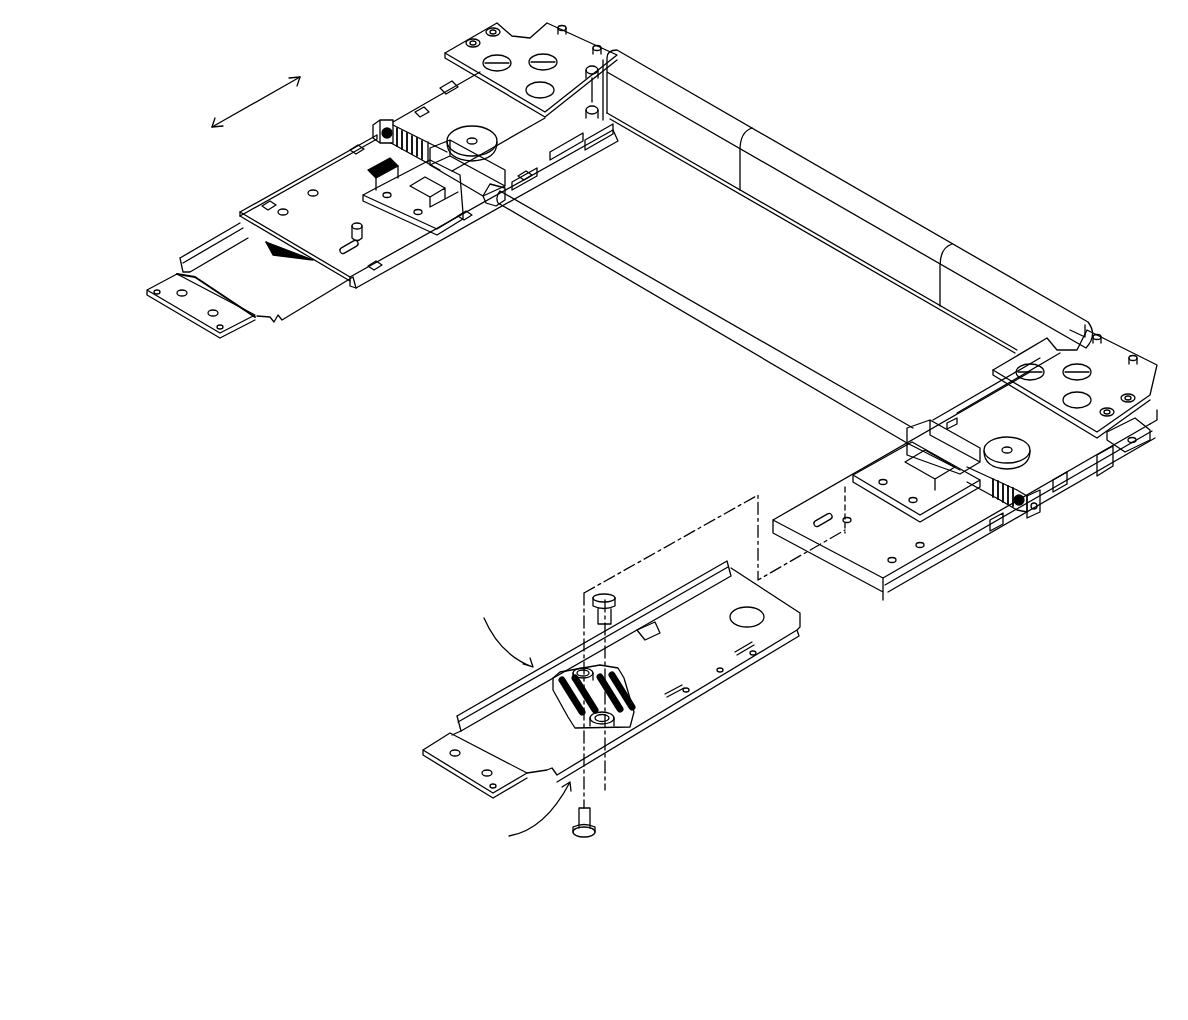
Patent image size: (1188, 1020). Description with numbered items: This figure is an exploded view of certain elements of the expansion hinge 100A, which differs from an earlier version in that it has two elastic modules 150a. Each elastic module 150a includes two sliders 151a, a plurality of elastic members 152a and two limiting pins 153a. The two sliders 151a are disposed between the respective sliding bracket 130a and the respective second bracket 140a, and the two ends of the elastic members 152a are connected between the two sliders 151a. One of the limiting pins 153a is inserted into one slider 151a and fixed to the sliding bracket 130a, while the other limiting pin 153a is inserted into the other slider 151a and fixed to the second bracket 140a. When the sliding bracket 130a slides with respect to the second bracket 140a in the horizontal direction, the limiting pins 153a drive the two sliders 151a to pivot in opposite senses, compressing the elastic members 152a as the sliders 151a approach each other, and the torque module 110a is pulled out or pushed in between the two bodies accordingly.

The expansion hinge 100A is at (1147, 796).
The torque module 110a is at (853, 207).
The sliding bracket 130a is at (947, 537).
The second bracket 140a is at (500, 720).
The elastic module 150a is at (675, 729).
The slider 151a is at (623, 720).
The elastic member 152a is at (623, 697).
The limiting pin 153a is at (615, 600).